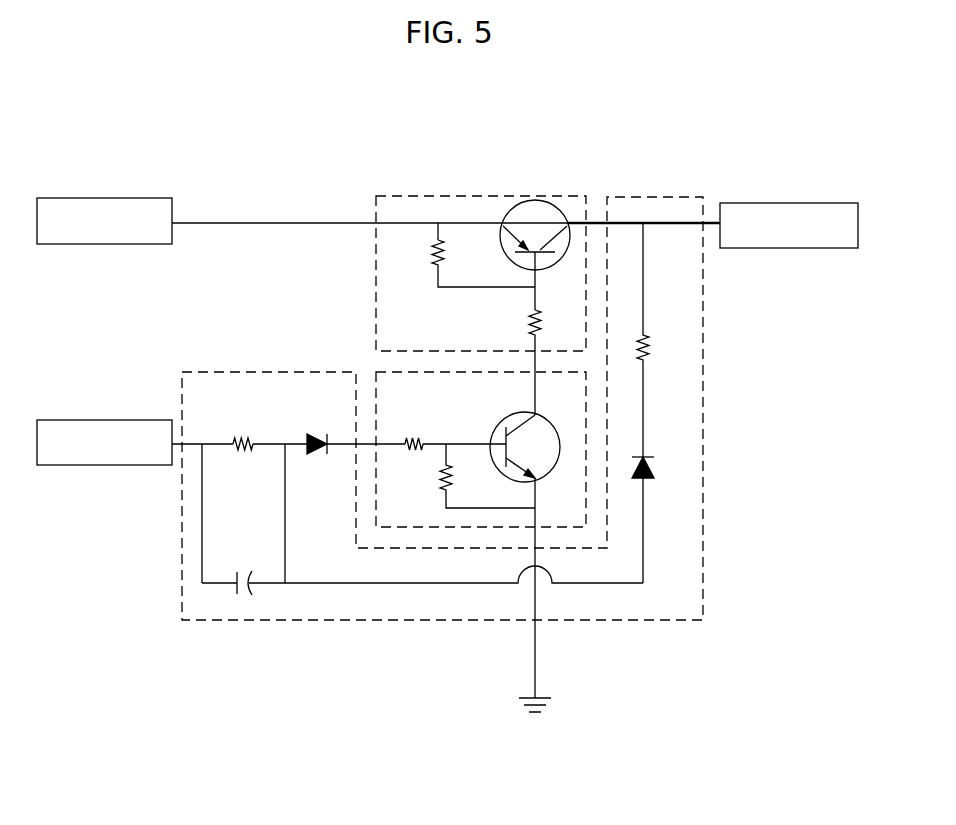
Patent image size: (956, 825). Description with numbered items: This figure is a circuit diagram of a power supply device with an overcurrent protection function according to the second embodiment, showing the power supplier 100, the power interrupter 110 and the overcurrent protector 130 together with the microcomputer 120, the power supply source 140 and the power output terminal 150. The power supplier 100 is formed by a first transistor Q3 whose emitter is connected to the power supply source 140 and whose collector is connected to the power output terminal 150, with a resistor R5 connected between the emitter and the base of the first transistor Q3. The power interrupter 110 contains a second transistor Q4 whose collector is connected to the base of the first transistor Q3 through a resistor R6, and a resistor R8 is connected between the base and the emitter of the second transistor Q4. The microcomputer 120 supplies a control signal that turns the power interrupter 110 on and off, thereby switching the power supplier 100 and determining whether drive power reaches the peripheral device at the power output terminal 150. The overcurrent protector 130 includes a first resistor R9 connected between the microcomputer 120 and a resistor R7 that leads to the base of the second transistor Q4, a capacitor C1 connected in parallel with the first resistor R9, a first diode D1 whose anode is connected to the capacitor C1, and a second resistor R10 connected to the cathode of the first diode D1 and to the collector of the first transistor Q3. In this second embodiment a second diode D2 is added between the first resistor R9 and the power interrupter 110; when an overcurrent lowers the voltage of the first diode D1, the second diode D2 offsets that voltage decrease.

The power supplier 100 is at (376, 300).
The power interrupter 110 is at (376, 372).
The microcomputer 120 is at (104, 442).
The overcurrent protector 130 is at (235, 372).
The power supply source 140 is at (104, 221).
The power output terminal 150 is at (789, 225).
The first transistor Q3 is at (535, 255).
The second transistor Q4 is at (525, 447).
The resistor R5 is at (483, 255).
The resistor R6 is at (549, 362).
The resistor R7 is at (413, 433).
The resistor R8 is at (487, 476).
The first resistor R9 is at (242, 457).
The second resistor R10 is at (662, 340).
The first diode D1 is at (656, 520).
The second diode D2 is at (318, 455).
The capacitor C1 is at (242, 574).